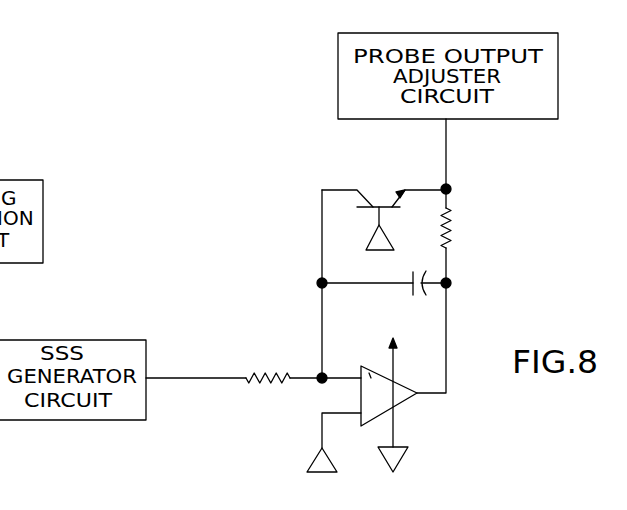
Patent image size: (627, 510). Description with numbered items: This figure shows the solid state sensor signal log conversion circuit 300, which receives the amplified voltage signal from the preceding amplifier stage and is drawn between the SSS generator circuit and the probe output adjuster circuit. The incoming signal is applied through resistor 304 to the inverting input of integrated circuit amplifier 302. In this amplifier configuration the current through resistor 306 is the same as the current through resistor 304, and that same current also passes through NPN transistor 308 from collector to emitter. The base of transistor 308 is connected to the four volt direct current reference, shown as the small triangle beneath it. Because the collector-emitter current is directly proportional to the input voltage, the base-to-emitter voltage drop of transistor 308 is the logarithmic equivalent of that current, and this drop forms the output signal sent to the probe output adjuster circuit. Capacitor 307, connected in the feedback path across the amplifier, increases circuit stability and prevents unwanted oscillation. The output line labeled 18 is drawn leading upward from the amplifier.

The solid state sensor log conversion circuit 300 is at (570, 205).
The integrated circuit amplifier 302 is at (432, 415).
The resistor 304 is at (265, 373).
The resistor 306 is at (451, 228).
The capacitor 307 is at (423, 304).
The NPN transistor 308 is at (363, 186).
The output signal line 18 is at (394, 325).